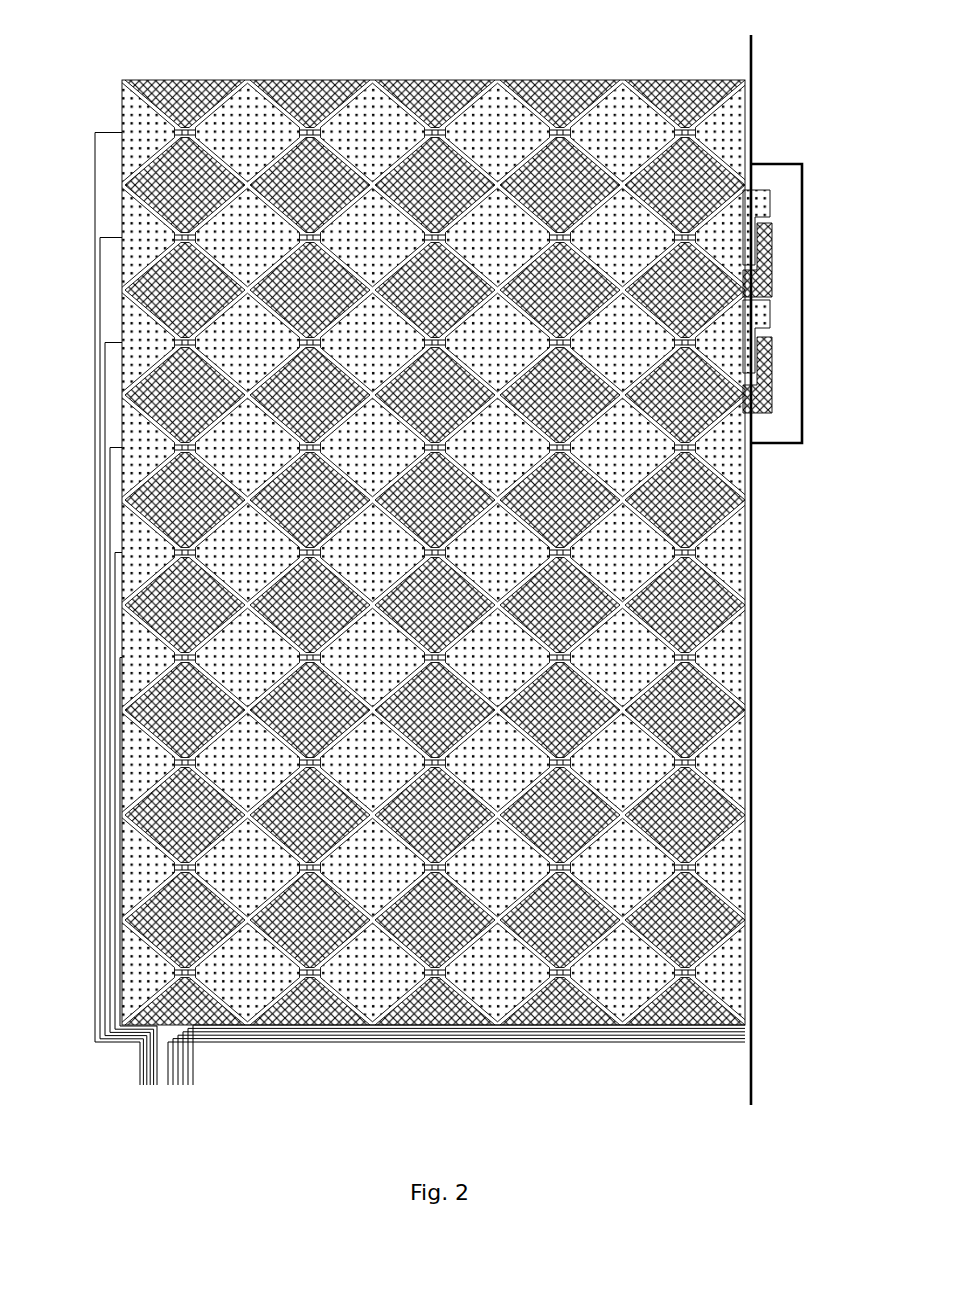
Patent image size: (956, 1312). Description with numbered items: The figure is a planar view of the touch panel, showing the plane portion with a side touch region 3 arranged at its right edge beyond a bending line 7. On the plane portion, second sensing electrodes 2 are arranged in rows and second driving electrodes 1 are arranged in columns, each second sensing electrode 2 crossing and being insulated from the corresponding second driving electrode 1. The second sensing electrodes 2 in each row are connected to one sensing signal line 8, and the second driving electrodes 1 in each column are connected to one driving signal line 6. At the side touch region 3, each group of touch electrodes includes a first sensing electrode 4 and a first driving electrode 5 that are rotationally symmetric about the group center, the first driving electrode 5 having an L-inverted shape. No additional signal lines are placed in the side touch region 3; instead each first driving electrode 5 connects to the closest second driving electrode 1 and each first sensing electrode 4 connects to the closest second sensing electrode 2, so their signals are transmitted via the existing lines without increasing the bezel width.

The second driving electrode 1 is at (660, 85).
The second sensing electrode 2 is at (718, 140).
The side touch region 3 is at (797, 190).
The first sensing electrode 4 is at (768, 305).
The first driving electrode 5 is at (768, 385).
The driving signal line 6 is at (445, 1032).
The bending line 7 is at (752, 80).
The sensing signal line 8 is at (95, 183).